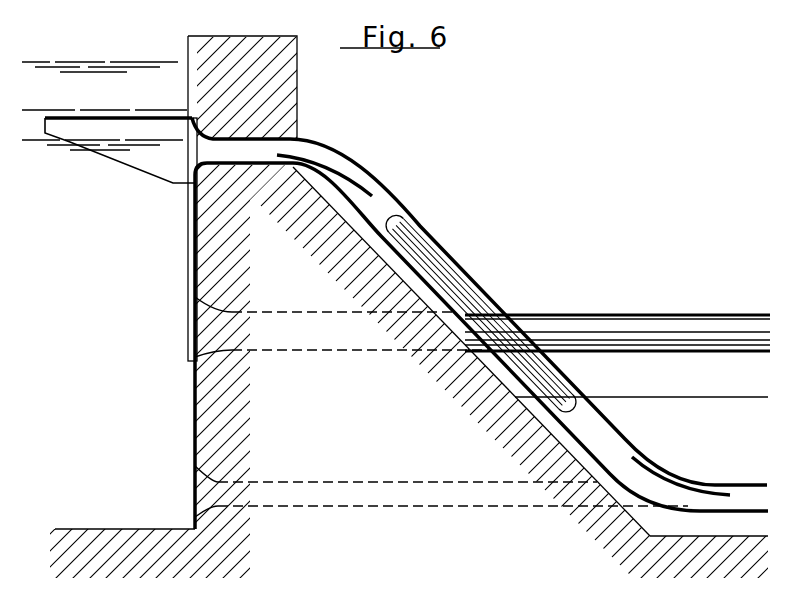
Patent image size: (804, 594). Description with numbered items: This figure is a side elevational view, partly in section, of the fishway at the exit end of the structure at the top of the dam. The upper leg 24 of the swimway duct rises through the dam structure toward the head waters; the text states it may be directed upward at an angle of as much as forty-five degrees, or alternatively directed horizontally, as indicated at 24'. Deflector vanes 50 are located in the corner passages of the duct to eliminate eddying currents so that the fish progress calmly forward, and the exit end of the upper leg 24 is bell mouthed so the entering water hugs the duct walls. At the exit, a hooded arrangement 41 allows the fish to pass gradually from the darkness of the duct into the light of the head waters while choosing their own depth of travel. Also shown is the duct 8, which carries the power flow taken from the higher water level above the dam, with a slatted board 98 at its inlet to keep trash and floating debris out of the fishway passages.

The hooded arrangement 41 is at (116, 179).
The deflector vanes 50 is at (341, 170).
The upper leg 24 is at (481, 313).
The duct 8 is at (608, 322).
The board 98 is at (195, 318).
The horizontally directed leg 24' is at (441, 480).